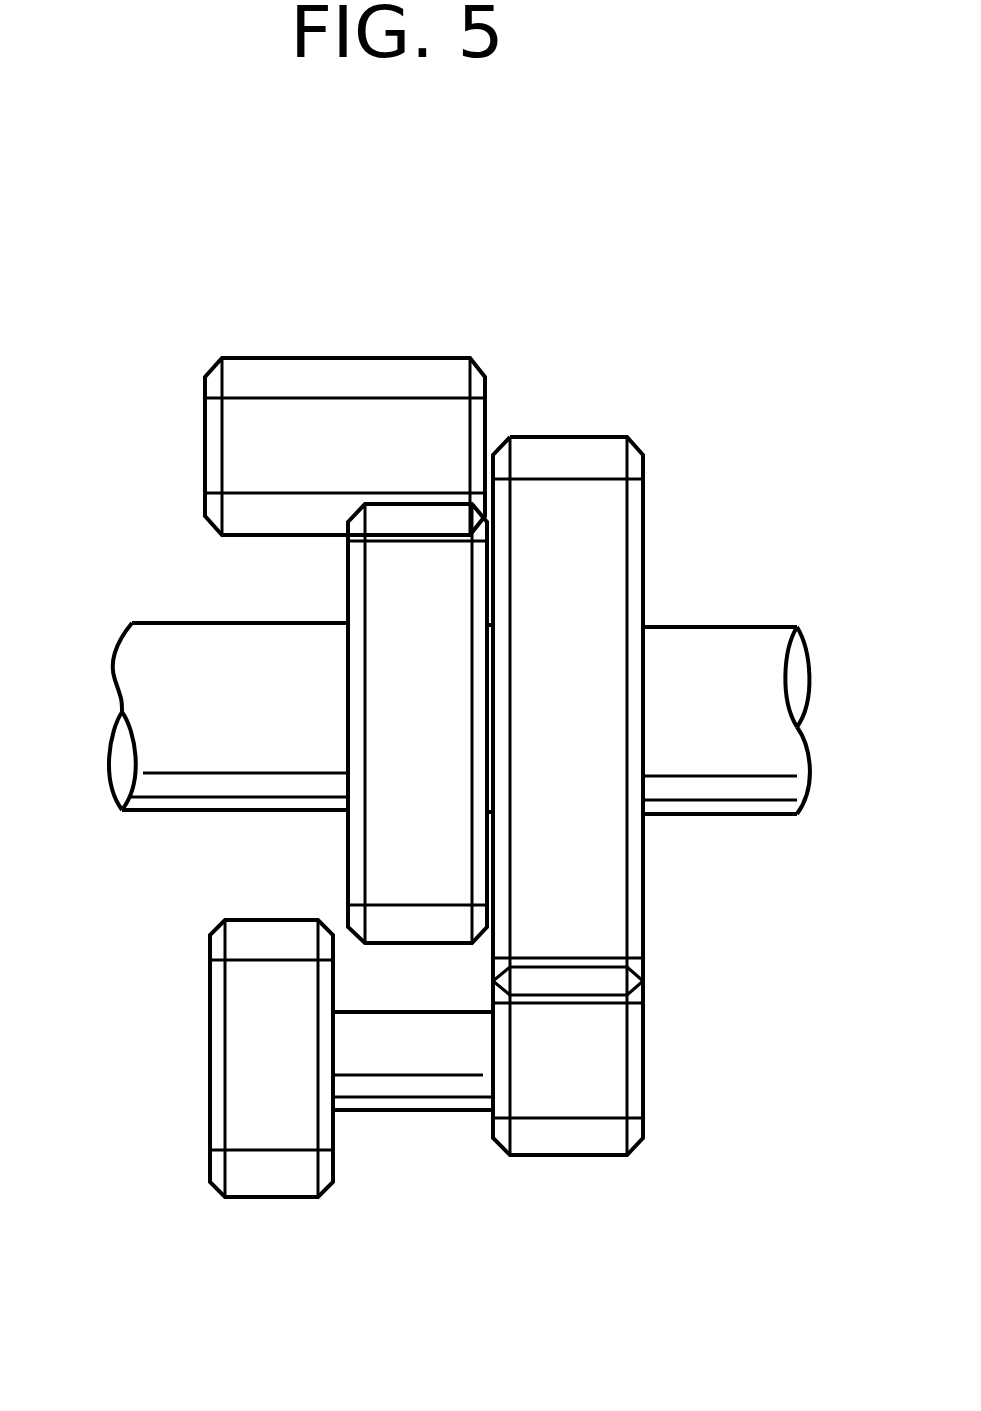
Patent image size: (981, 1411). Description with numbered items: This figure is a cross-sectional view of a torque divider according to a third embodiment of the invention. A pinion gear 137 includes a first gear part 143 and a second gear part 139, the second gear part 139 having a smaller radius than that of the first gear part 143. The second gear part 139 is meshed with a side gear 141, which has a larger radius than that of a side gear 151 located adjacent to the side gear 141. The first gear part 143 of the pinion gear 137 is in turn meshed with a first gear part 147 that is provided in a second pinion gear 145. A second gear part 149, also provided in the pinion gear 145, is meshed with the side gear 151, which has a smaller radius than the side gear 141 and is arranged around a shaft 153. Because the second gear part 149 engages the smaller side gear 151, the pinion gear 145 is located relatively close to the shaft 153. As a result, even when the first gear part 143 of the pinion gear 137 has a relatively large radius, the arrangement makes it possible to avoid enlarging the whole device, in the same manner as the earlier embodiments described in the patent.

The pinion gear 137 is at (200, 1210).
The second gear part 139 is at (573, 1138).
The side gear 141 is at (567, 448).
The first gear part 143 is at (270, 1173).
The pinion gear 145 is at (190, 340).
The first gear part 147 is at (284, 413).
The second gear part 149 is at (442, 373).
The side gear 151 is at (360, 880).
The shaft 153 is at (163, 638).